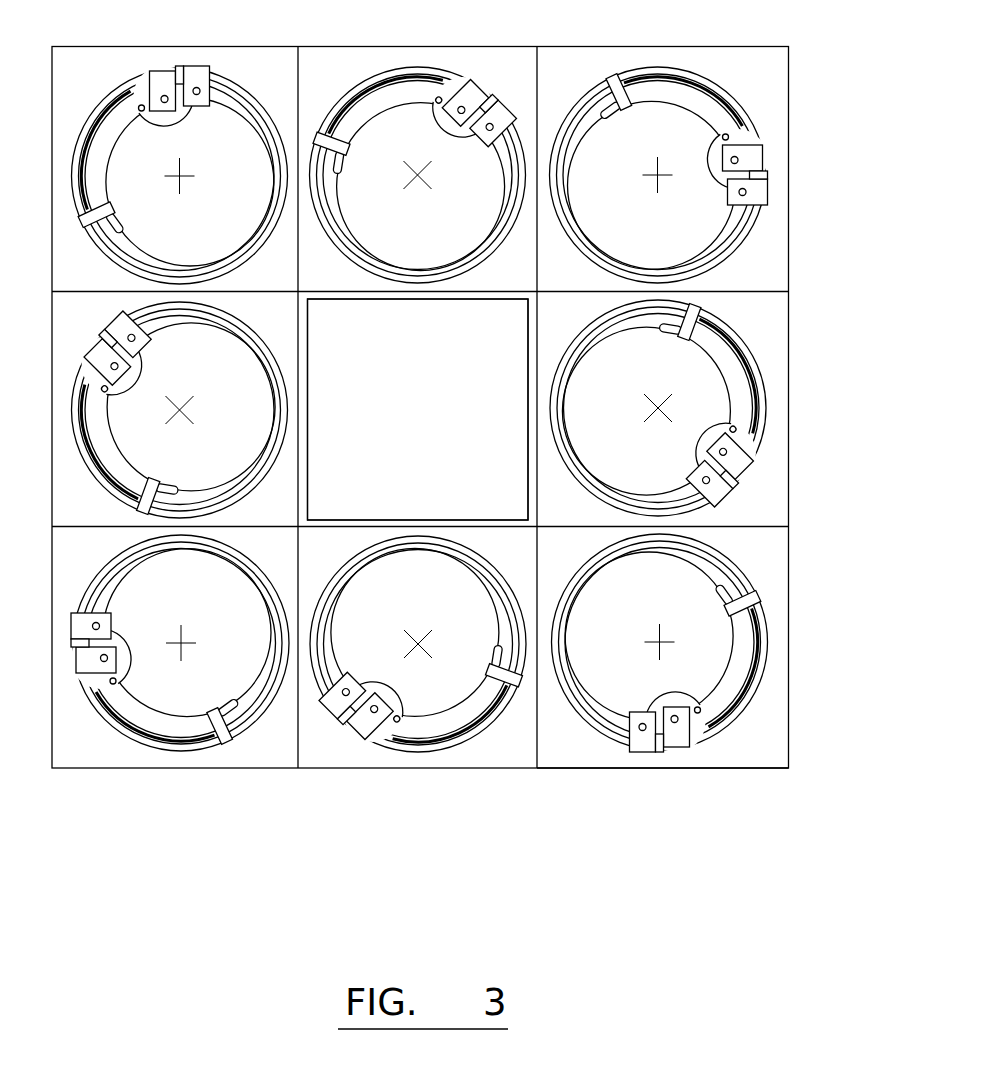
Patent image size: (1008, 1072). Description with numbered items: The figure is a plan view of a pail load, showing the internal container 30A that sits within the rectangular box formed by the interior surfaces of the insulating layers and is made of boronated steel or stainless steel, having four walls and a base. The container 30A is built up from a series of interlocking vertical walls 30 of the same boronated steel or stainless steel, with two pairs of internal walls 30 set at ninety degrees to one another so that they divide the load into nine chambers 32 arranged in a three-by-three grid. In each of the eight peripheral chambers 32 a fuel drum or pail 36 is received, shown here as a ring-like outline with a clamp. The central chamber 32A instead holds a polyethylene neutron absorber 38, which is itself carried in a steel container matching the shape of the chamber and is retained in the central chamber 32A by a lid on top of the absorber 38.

The interlocking vertical walls 30 is at (738, 527).
The internal container 30A is at (698, 775).
The chambers 32 is at (758, 740).
The central chamber 32A is at (393, 520).
The fuel drum or pail 36 is at (695, 660).
The polyethylene neutron absorber 38 is at (433, 400).